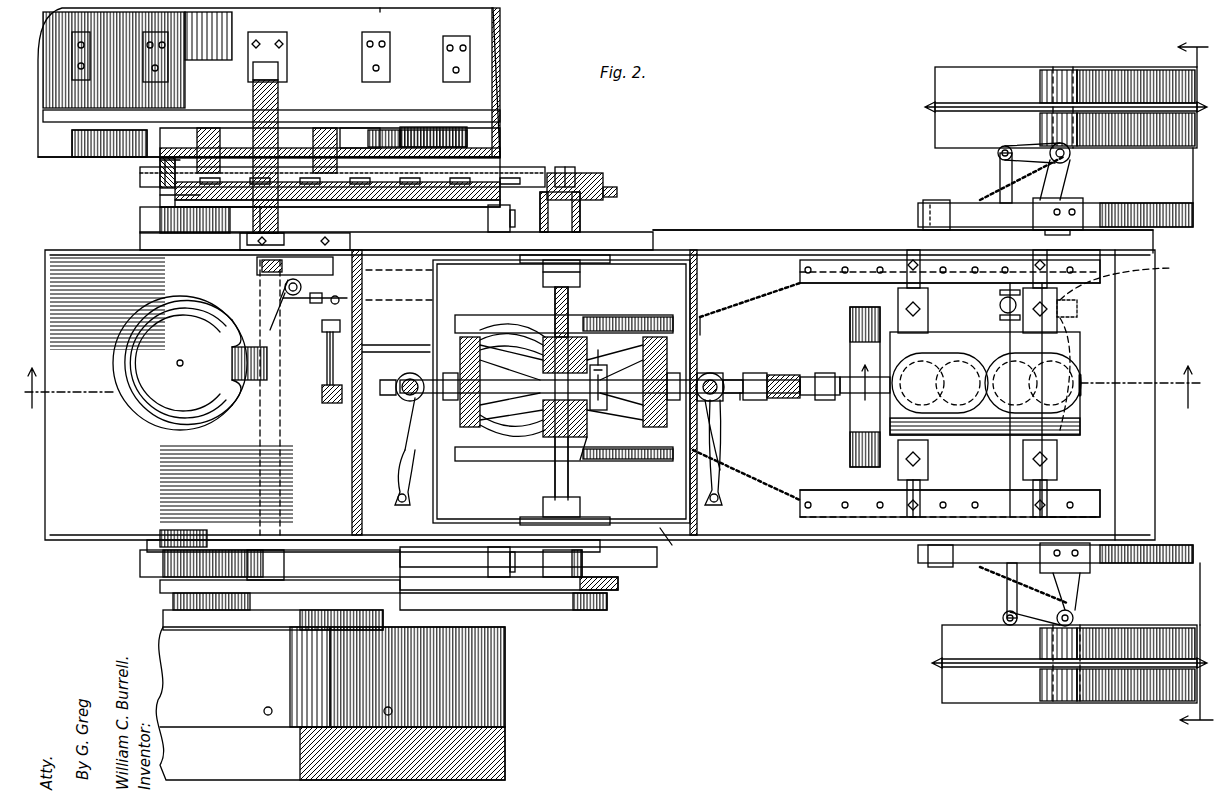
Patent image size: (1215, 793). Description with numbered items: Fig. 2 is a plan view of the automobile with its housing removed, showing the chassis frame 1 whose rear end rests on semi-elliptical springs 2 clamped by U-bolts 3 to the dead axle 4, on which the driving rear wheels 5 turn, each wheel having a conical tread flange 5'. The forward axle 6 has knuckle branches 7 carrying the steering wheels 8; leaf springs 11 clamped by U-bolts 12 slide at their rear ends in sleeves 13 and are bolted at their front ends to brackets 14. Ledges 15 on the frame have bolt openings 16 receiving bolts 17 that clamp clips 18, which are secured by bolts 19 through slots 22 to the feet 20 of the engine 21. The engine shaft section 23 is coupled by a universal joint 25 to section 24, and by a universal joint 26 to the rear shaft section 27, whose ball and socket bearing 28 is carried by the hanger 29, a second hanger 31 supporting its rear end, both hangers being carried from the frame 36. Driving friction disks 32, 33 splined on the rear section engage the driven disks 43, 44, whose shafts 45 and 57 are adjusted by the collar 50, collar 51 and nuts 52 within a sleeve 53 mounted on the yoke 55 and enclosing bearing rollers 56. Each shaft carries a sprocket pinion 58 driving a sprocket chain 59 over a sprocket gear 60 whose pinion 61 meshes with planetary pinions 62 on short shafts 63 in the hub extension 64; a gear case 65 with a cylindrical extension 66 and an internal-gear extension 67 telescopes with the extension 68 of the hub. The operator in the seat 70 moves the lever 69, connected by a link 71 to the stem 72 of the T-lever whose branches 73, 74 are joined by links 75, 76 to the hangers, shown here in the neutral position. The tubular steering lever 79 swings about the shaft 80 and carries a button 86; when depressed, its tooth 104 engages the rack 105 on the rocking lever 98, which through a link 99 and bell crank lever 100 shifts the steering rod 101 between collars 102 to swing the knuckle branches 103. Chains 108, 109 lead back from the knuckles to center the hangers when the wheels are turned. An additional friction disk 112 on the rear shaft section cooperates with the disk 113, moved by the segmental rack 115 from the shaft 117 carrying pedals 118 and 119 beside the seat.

The chassis frame 1 is at (790, 250).
The semi-elliptical springs 2 is at (510, 217).
The U-bolts 3 is at (612, 392).
The dead axle 4 is at (240, 441).
The driving rear vehicle wheels 5 is at (296, 394).
The conical tread flange 5' is at (518, 382).
The forward non-rotating axle 6 is at (1083, 185).
The knuckle branches 7 is at (1073, 95).
The forward steering vehicle wheels 8 is at (968, 70).
The leaf springs 11 is at (1165, 203).
The U-bolts 12 is at (1010, 213).
The sockets or sleeves 13 is at (935, 200).
The brackets 14 is at (1070, 175).
The ledges 15 is at (818, 490).
The bolt openings 16 is at (855, 258).
The bolts 17 is at (905, 262).
The clips 18 is at (1075, 262).
The bolts 19 is at (898, 305).
The feet 20 is at (928, 315).
The engine 21 is at (1060, 340).
The slots 22 is at (907, 495).
The engine shaft section 23 is at (825, 373).
The shaft section 24 is at (782, 375).
The universal joint 25 is at (840, 393).
The universal joint 26 is at (748, 400).
The rear shaft section 27 is at (752, 373).
The forward ball and socket bearing 28 is at (715, 373).
The hanger 29 is at (727, 435).
The hanger 31 is at (398, 378).
The driving friction disk 32 is at (642, 413).
The driving friction disk 33 is at (493, 382).
The frame 36 is at (732, 320).
The friction disk 43 is at (640, 318).
The friction disk 44 is at (640, 460).
The shaft 45 is at (570, 290).
The internally threaded collar 50 is at (612, 262).
The collar 51 is at (543, 272).
The nuts 52 is at (543, 385).
The sleeve 53 is at (500, 322).
The yoke 55 is at (485, 420).
The bearing rollers 56 is at (548, 337).
The shaft 57 is at (555, 474).
The sprocket pinion 58 is at (605, 180).
The sprocket chain 59 is at (510, 177).
The sprocket gear 60 is at (170, 190).
The pinion 61 is at (335, 125).
The planetary pinions 62 is at (400, 130).
The short shafts 63 is at (205, 128).
The hub extension 64 is at (150, 142).
The gear case 65 is at (573, 167).
The cylindrical extension 66 is at (580, 220).
The cylindrical extension 67 is at (368, 207).
The cylindrical extension 68 is at (160, 168).
The lever 69 is at (328, 305).
The seat 70 is at (205, 420).
The link 71 is at (399, 285).
The stem 72 is at (570, 302).
The branch 73 is at (455, 495).
The branch 74 is at (672, 548).
The link 75 is at (400, 460).
The link 76 is at (720, 460).
The tubular lever 79 is at (283, 300).
The non-rotatable shaft 80 is at (408, 410).
The operating button 86 is at (285, 292).
The rocking lever 98 is at (240, 242).
The link 99 is at (738, 252).
The bell crank lever 100 is at (1129, 344).
The steering rod 101 is at (1000, 178).
The collars 102 is at (1000, 292).
The knuckle branches 103 is at (1030, 146).
The tooth 104 is at (285, 286).
The rack 105 is at (262, 262).
The chain 108 is at (746, 484).
The chain 109 is at (750, 295).
The friction disk 112 is at (614, 385).
The friction disk 113 is at (617, 354).
The segmental rack 115 is at (582, 460).
The shaft 117 is at (397, 360).
The pedal 118 is at (322, 330).
The pedal 119 is at (322, 398).